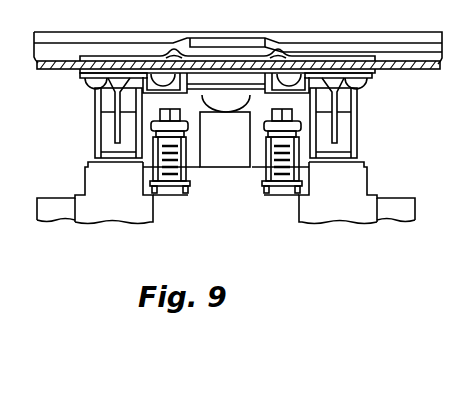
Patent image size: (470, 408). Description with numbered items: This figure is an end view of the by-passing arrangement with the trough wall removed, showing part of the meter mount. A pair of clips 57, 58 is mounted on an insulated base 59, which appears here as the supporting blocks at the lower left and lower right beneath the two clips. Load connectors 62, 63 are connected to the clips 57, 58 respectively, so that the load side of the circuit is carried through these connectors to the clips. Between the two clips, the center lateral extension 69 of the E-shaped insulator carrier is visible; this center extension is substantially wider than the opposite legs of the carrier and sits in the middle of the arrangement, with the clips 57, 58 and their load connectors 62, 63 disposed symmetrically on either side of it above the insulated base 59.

The clip 57 is at (94, 127).
The clip 58 is at (358, 128).
The insulated base 59 is at (118, 210).
The load connector 62 is at (184, 195).
The load connector 63 is at (257, 196).
The center lateral extension 69 is at (225, 150).